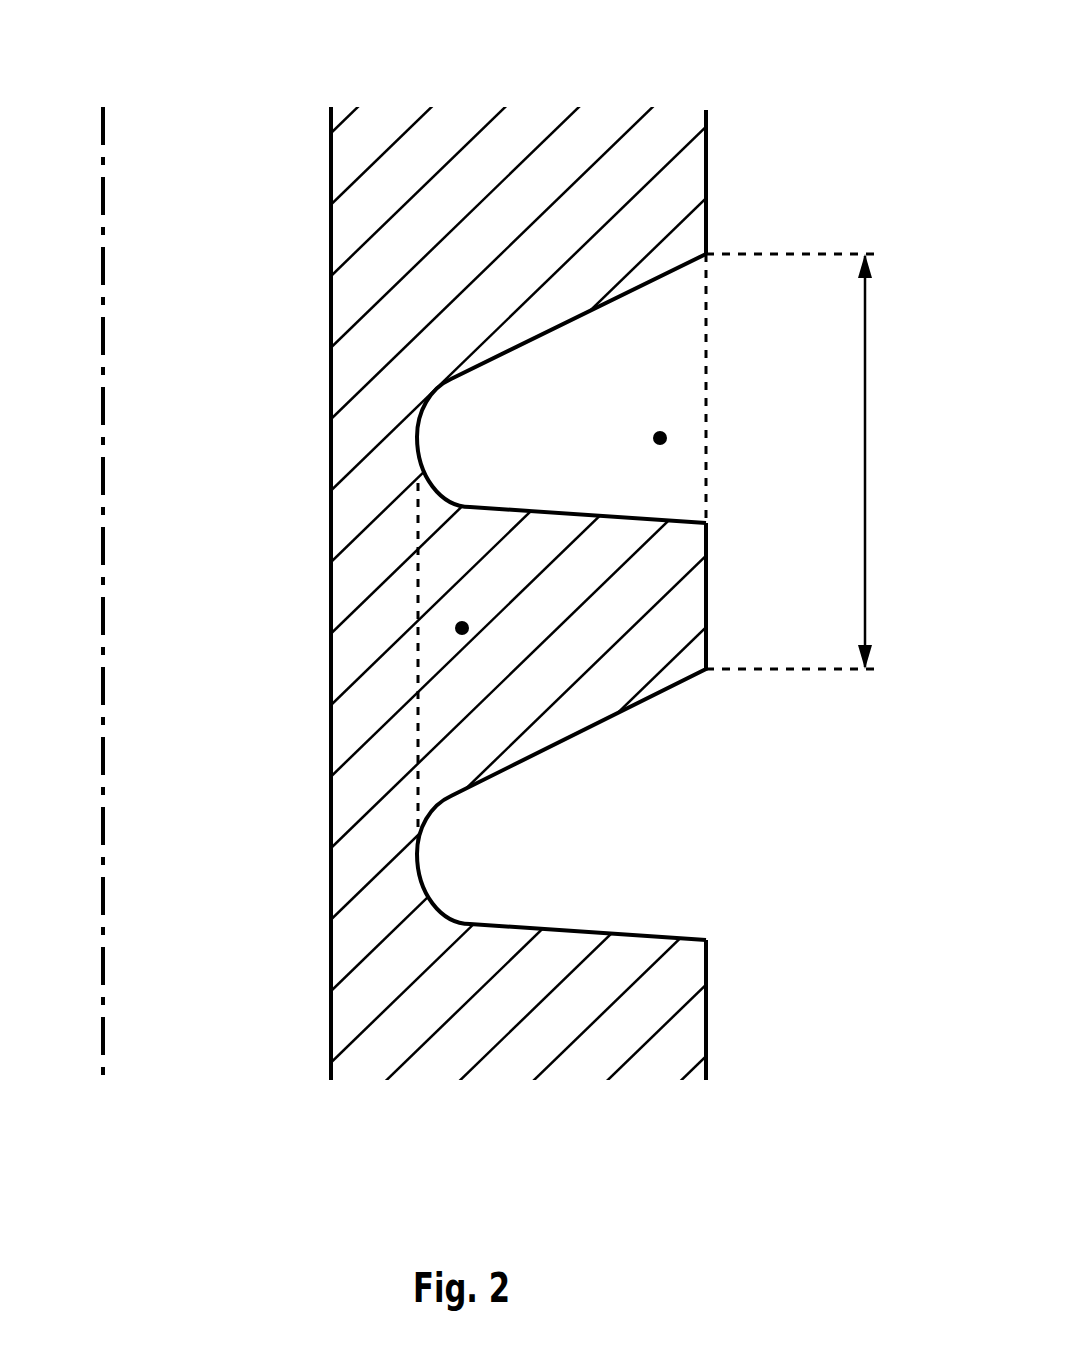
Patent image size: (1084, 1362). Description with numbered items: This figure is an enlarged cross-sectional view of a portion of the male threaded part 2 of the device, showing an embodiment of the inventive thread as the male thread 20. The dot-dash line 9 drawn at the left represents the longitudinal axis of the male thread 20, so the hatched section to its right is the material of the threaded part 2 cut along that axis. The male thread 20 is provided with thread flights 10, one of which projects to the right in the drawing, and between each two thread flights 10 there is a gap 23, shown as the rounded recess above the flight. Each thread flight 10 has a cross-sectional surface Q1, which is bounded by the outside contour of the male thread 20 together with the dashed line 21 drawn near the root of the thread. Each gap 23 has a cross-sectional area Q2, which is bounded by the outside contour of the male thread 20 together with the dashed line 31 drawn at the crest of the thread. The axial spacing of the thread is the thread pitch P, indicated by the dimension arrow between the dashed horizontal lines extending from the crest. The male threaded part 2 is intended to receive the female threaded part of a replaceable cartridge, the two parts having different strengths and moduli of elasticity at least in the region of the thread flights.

The dot-dash line 9 is at (105, 172).
The male threaded part 2 is at (662, 681).
The male thread 20 is at (360, 279).
The dashed line 21 is at (418, 540).
The dashed line 31 is at (708, 345).
The gap 23 is at (524, 441).
The thread flight 10 is at (513, 621).
The cross-sectional surface Q1 is at (462, 628).
The cross-sectional area Q2 is at (660, 438).
The thread pitch P is at (866, 378).